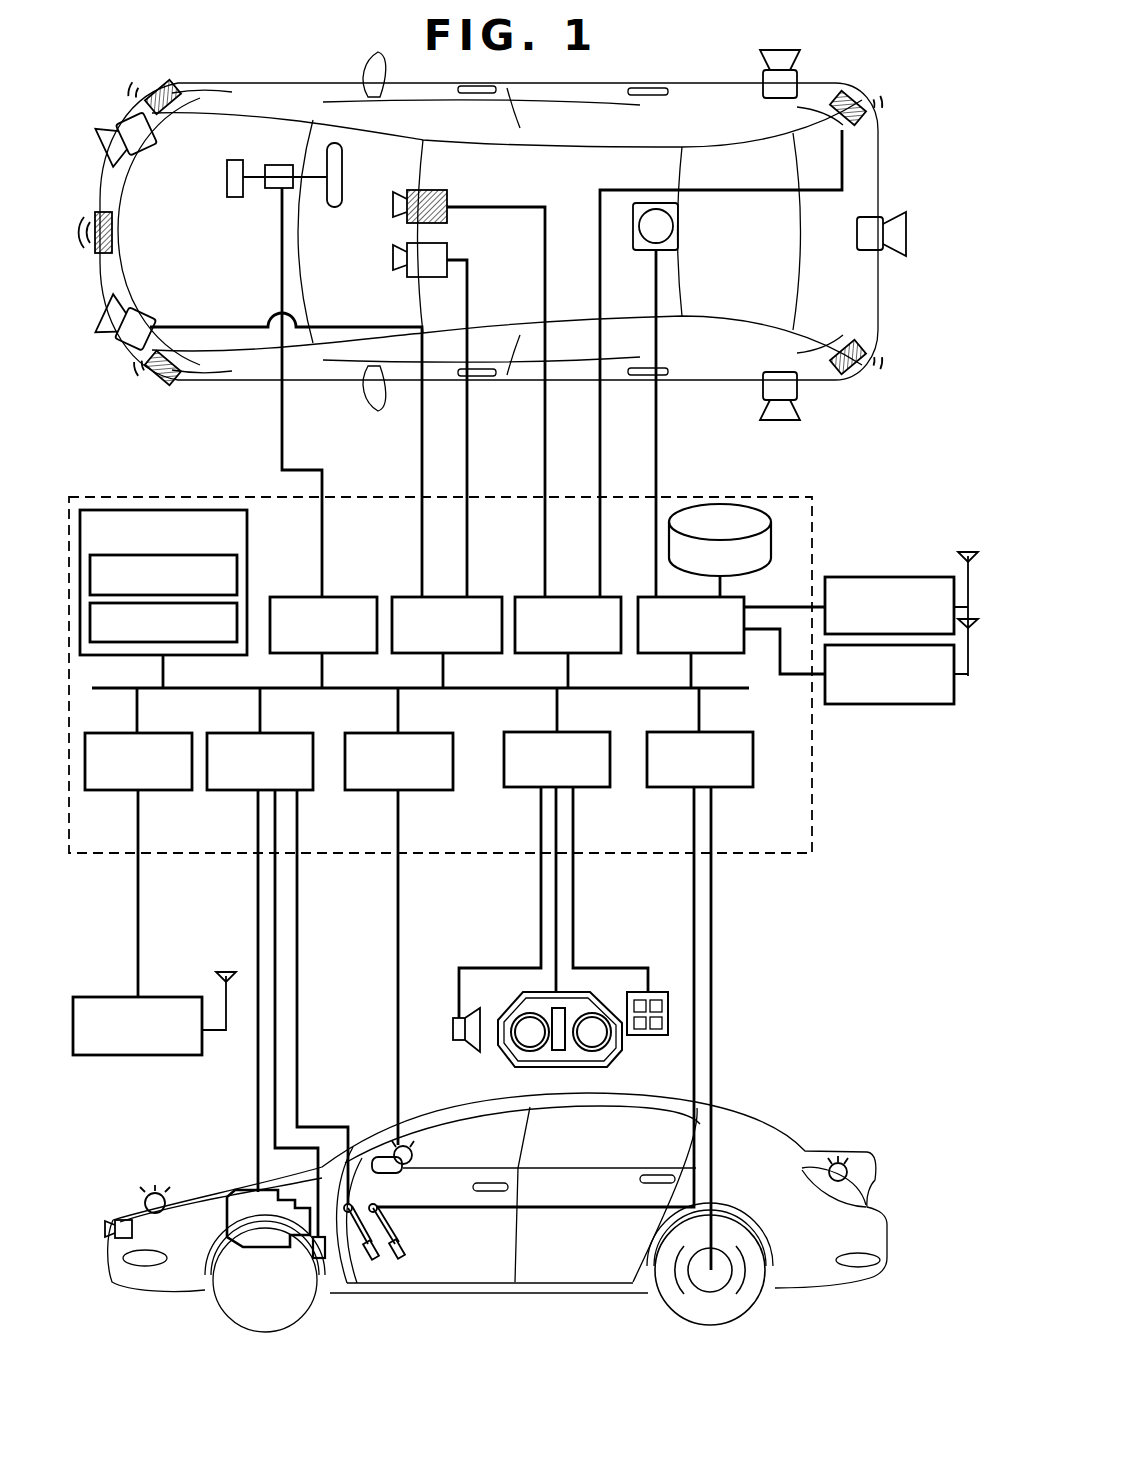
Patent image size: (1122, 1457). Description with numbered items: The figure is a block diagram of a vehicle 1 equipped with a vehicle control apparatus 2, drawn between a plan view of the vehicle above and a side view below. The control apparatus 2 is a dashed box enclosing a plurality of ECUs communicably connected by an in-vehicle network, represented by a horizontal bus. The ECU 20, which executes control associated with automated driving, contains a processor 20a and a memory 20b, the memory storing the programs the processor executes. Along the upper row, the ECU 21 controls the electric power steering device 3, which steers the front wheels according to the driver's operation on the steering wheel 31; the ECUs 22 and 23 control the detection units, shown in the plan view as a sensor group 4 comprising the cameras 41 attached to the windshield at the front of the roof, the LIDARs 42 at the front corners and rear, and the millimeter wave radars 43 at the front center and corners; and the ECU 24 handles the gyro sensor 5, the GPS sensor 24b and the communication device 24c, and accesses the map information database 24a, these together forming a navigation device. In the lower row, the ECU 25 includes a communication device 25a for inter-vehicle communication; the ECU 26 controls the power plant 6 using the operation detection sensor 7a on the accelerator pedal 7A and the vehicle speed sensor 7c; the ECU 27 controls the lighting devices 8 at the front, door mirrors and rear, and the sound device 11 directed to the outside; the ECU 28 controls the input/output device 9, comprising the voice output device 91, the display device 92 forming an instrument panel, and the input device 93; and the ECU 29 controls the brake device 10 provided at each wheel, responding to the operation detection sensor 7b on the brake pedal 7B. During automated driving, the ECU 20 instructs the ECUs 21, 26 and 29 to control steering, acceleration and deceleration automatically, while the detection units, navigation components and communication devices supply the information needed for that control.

The vehicle 1 is at (893, 124).
The vehicle control apparatus 2 is at (783, 856).
The electric power steering device 3 is at (235, 198).
The external sensor group 4 is at (120, 88).
The gyro sensor 5 is at (680, 226).
The power plant 6 is at (232, 1188).
The operation detection sensor 7a is at (350, 1202).
The operation detection sensor 7b is at (378, 1206).
The accelerator pedal 7A is at (406, 1231).
The brake pedal 7B is at (402, 1245).
The vehicle speed sensor 7c is at (320, 1260).
The lighting devices 8 is at (147, 1196).
The input/output device 9 is at (485, 1068).
The brake device 10 is at (712, 1293).
The sound device 11 is at (110, 1234).
The ECU 20 is at (196, 553).
The processor 20a is at (237, 575).
The memory 20b is at (237, 621).
The ECU 21 is at (351, 596).
The ECU 22 is at (446, 596).
The ECU 23 is at (574, 596).
The ECU 24 is at (644, 596).
The map information database 24a is at (716, 504).
The GPS sensor 24b is at (883, 576).
The communication device 24c is at (880, 705).
The ECU 25 is at (166, 791).
The communication device 25a is at (139, 1056).
The ECU 26 is at (244, 791).
The ECU 27 is at (425, 791).
The ECU 28 is at (592, 788).
The ECU 29 is at (731, 788).
The steering wheel 31 is at (334, 208).
The camera 41 is at (448, 213).
The LIDAR 42 is at (147, 156).
The millimeter wave radar 43 is at (168, 113).
The voice output device 91 is at (452, 1026).
The display device 92 is at (516, 1006).
The input device 93 is at (650, 1036).